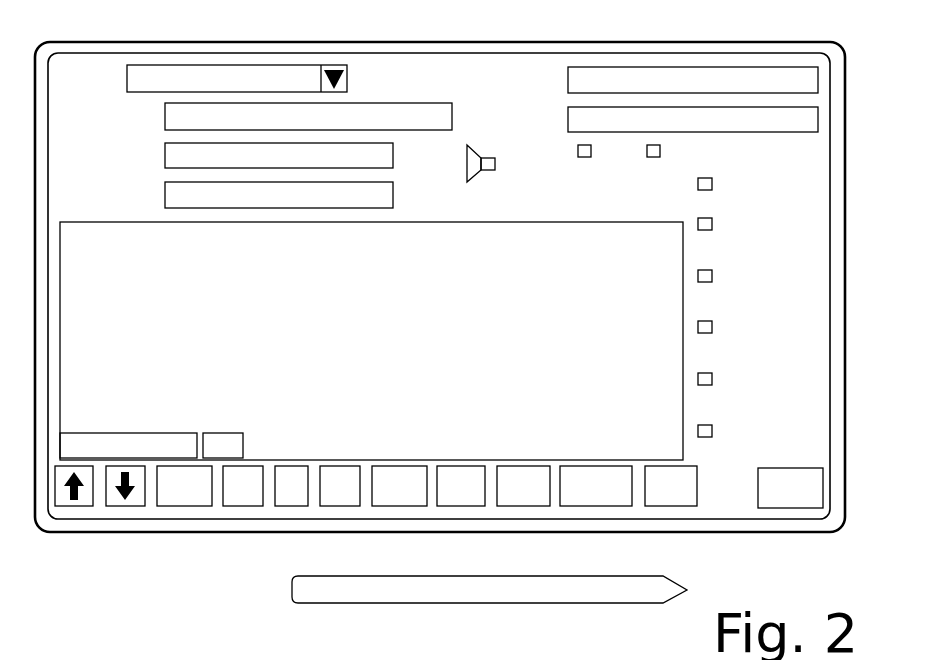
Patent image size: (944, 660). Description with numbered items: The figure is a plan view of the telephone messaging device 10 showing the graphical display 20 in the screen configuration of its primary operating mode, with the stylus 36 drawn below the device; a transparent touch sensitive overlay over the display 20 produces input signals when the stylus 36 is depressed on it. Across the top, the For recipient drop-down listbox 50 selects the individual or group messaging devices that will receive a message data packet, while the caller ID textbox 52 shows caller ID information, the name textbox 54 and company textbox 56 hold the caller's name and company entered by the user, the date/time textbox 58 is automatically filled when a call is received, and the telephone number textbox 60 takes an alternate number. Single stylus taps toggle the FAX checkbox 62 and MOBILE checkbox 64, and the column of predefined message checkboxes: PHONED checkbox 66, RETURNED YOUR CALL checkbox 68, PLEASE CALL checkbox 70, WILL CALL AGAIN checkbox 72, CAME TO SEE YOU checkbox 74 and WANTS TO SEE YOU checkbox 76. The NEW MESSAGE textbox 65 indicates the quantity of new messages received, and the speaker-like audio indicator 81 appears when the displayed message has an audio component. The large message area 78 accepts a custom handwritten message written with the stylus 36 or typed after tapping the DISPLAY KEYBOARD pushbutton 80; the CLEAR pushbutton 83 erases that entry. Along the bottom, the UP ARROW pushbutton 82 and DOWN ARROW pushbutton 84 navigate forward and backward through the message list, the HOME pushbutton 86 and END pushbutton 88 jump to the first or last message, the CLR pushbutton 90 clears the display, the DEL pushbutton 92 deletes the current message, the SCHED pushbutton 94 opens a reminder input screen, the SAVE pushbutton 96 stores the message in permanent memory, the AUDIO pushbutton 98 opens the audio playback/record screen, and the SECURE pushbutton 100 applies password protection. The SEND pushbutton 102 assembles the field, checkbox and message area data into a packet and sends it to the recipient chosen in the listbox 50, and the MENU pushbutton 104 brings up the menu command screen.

The telephone messaging device 10 is at (194, 578).
The graphical display 20 is at (830, 500).
The stylus 36 is at (292, 589).
The recipient drop-down listbox 50 is at (290, 65).
The caller ID textbox 52 is at (413, 103).
The name textbox 54 is at (393, 160).
The company textbox 56 is at (393, 196).
The date/time textbox 58 is at (818, 85).
The telephone number textbox 60 is at (818, 123).
The FAX checkbox 62 is at (578, 151).
The MOBILE checkbox 64 is at (738, 150).
The NEW MESSAGE textbox 65 is at (620, 191).
The PHONED checkbox 66 is at (808, 180).
The RETURNED YOUR CALL checkbox 68 is at (811, 219).
The PLEASE CALL checkbox 70 is at (823, 268).
The WILL CALL AGAIN checkbox 72 is at (812, 322).
The CAME TO SEE YOU checkbox 74 is at (811, 374).
The WANTS TO SEE YOU checkbox 76 is at (811, 427).
The message area 78 is at (392, 343).
The DISPLAY KEYBOARD pushbutton 80 is at (142, 433).
The audio indicator 81 is at (495, 164).
The UP ARROW pushbutton 82 is at (83, 506).
The CLEAR pushbutton 83 is at (228, 433).
The DOWN ARROW pushbutton 84 is at (137, 506).
The HOME pushbutton 86 is at (197, 506).
The END pushbutton 88 is at (243, 506).
The CLR pushbutton 90 is at (303, 506).
The DEL pushbutton 92 is at (357, 506).
The SCHED pushbutton 94 is at (422, 506).
The SAVE pushbutton 96 is at (473, 506).
The AUDIO pushbutton 98 is at (540, 506).
The SECURE pushbutton 100 is at (622, 506).
The SEND pushbutton 102 is at (693, 506).
The MENU pushbutton 104 is at (802, 508).